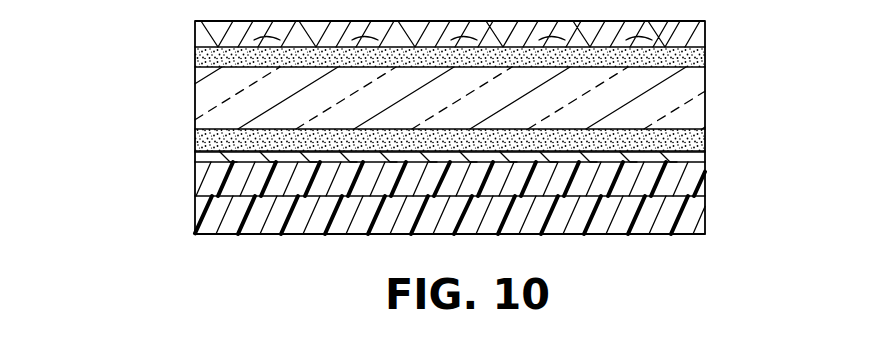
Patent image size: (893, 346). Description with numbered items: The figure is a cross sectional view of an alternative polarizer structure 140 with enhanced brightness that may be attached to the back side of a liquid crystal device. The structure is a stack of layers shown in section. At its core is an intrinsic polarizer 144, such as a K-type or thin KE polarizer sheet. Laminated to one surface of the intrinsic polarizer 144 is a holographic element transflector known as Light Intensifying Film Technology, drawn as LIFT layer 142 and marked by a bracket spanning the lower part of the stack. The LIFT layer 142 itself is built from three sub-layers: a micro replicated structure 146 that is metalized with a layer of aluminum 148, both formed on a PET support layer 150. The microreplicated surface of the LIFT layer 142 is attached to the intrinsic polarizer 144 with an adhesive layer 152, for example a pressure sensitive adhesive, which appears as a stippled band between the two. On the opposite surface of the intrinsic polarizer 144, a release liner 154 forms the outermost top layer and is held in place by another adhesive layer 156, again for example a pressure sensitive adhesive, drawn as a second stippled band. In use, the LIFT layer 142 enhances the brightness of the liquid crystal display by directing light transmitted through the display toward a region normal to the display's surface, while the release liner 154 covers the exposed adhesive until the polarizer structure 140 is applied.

The polarizer structure 140 is at (124, 86).
The LIFT layer 142 is at (193, 151).
The intrinsic polarizer 144 is at (693, 92).
The micro replicated structure 146 is at (698, 178).
The layer of aluminum 148 is at (698, 157).
The PET support layer 150 is at (695, 210).
The adhesive layer 152 is at (700, 140).
The release liner 154 is at (705, 22).
The adhesive layer 156 is at (702, 57).